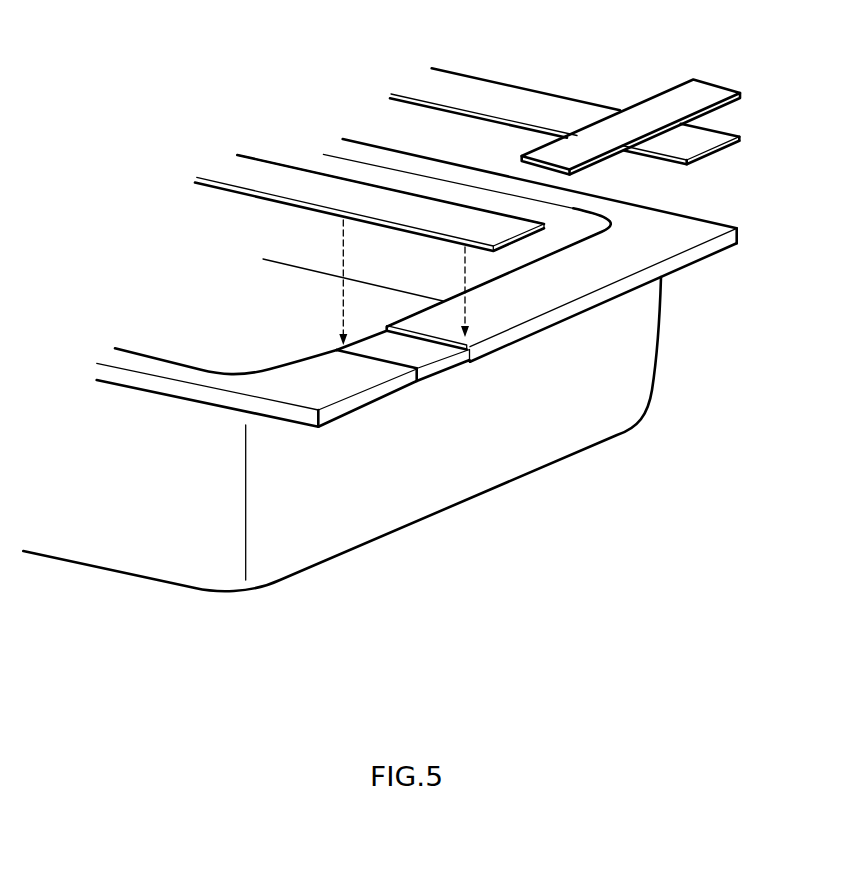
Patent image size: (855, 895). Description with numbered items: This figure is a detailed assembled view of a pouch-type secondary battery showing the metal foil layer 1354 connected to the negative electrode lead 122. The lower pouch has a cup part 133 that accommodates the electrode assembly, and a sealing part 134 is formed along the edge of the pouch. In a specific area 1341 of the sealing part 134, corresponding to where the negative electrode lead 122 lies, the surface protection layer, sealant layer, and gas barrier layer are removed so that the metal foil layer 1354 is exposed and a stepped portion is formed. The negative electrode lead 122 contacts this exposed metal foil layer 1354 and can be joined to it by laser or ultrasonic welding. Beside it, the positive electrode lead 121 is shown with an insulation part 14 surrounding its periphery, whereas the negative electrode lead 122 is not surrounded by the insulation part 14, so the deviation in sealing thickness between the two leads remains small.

The insulation part 14 is at (702, 93).
The positive electrode lead 121 is at (698, 144).
The negative electrode lead 122 is at (280, 177).
The cup part 133 is at (98, 552).
The sealing part 134 is at (667, 245).
The specific area 1341 is at (374, 336).
The metal foil layer 1354 is at (437, 367).